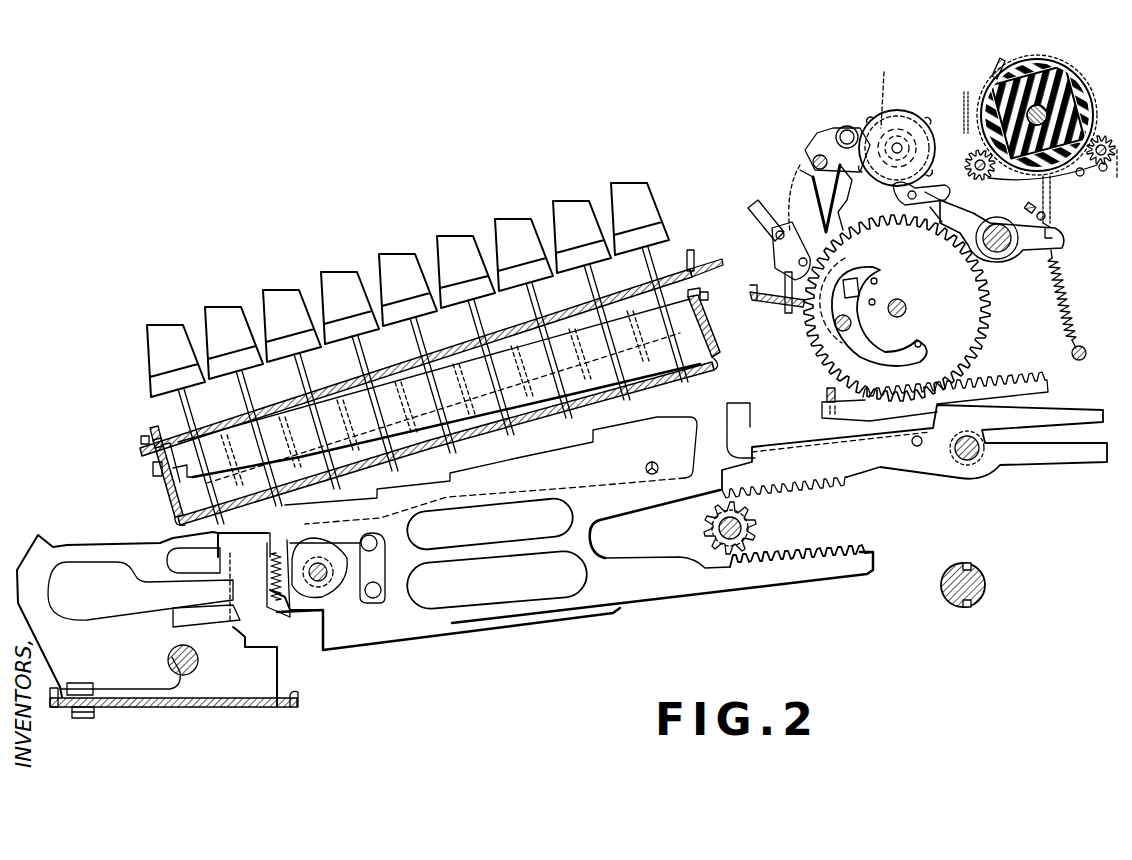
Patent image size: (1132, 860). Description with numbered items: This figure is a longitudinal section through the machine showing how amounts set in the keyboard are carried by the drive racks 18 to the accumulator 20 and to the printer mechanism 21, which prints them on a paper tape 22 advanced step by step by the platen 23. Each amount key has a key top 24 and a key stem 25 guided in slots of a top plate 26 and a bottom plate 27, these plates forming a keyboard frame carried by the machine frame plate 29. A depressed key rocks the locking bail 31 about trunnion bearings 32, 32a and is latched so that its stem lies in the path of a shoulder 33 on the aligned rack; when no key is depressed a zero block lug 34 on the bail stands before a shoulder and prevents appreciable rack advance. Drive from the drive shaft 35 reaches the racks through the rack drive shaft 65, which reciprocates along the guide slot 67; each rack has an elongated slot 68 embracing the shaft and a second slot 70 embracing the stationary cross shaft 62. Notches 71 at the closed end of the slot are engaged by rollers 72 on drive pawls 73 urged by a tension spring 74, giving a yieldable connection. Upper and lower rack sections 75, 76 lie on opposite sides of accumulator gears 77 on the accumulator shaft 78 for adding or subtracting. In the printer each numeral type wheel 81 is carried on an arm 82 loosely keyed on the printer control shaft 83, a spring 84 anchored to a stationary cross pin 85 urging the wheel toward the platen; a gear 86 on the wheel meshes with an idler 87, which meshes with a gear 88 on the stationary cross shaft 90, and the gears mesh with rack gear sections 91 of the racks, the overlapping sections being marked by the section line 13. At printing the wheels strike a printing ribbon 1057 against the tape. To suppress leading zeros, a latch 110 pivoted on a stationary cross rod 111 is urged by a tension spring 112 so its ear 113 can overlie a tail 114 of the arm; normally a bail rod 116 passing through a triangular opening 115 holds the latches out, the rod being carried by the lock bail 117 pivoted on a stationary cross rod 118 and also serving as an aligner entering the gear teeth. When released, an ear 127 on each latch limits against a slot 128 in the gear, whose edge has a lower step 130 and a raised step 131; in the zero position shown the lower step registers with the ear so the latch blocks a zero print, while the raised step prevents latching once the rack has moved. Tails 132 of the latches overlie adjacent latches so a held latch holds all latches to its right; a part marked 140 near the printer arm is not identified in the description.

The pin 13 is at (778, 384).
The drive rack 18 is at (675, 613).
The accumulator 20 is at (765, 536).
The printer mechanism 21 is at (850, 114).
The paper tape 22 is at (993, 60).
The platen 23 is at (1054, 62).
The key top 24 is at (283, 290).
The key stem 25 is at (300, 366).
The top plate 26 is at (405, 363).
The bottom plate 27 is at (428, 455).
The machine frame plate 29 is at (279, 677).
The locking bail 31 is at (165, 495).
The trunnion bearing 32 is at (708, 298).
The trunnion bearing 32a is at (154, 470).
The shoulder 33 is at (452, 468).
The zero block lug 34 is at (300, 515).
The drive shaft 35 is at (941, 587).
The stationary cross shaft 62 is at (965, 462).
The rack drive shaft 65 is at (322, 588).
The guide slot 67 is at (131, 600).
The elongated slot 68 is at (245, 600).
The second slot 70 is at (1018, 432).
The opposed notches 71 is at (408, 534).
The roller 72 is at (377, 560).
The drive pawl 73 is at (368, 603).
The tension spring 74 is at (268, 570).
The upper rack section 75 is at (845, 482).
The lower rack section 76 is at (862, 545).
The accumulator gear 77 is at (708, 537).
The accumulator shaft 78 is at (712, 525).
The numeral type wheel 81 is at (916, 110).
The arm 82 is at (960, 232).
The printer control shaft 83 is at (1000, 255).
The spring 84 is at (1068, 304).
The stationary cross pin 85 is at (1087, 353).
The gear 86 is at (886, 92).
The idler 87 is at (936, 186).
The gear 88 is at (985, 334).
The stationary cross shaft 90 is at (908, 307).
The rack gear section 91 is at (1003, 376).
The latch 110 is at (808, 185).
The stationary cross rod 111 is at (856, 326).
The tension spring 112 is at (770, 245).
The ear 113 is at (812, 164).
The tail 114 is at (841, 197).
The triangular opening 115 is at (806, 198).
The bail rod 116 is at (789, 302).
The lock bail 117 is at (765, 305).
The stationary cross rod 118 is at (810, 152).
The ear 127 is at (868, 266).
The slot 128 is at (917, 342).
The lower step 130 is at (880, 280).
The raised step 131 is at (876, 300).
The tail 132 is at (750, 216).
The pin 140 is at (1045, 236).
The printing ribbon 1057 is at (960, 95).